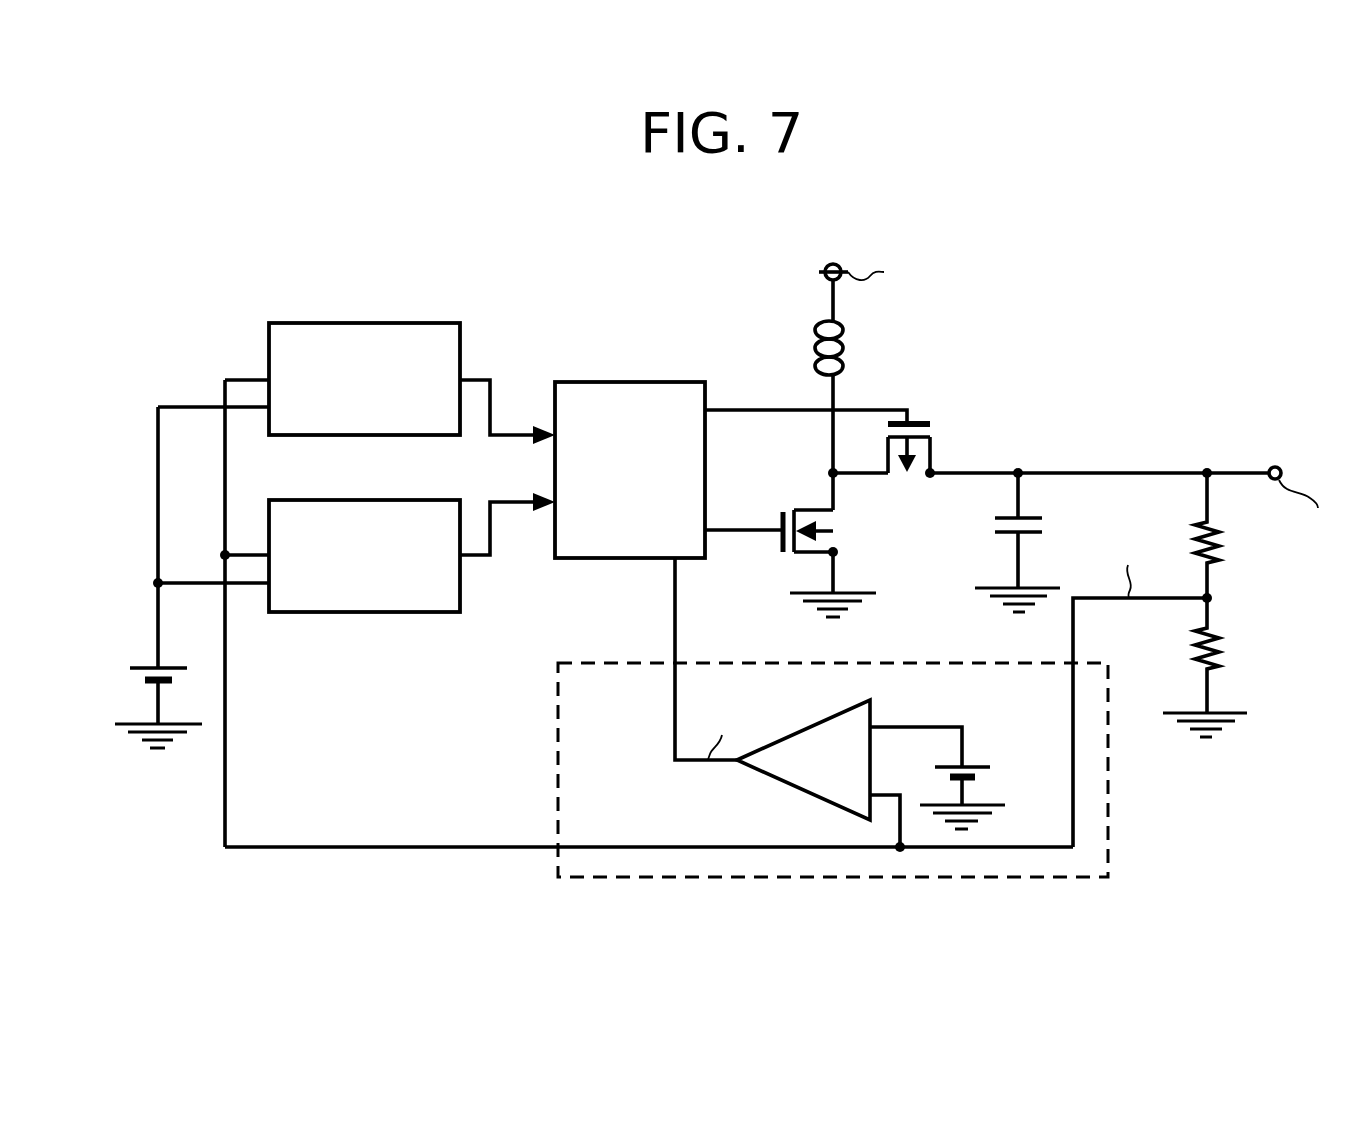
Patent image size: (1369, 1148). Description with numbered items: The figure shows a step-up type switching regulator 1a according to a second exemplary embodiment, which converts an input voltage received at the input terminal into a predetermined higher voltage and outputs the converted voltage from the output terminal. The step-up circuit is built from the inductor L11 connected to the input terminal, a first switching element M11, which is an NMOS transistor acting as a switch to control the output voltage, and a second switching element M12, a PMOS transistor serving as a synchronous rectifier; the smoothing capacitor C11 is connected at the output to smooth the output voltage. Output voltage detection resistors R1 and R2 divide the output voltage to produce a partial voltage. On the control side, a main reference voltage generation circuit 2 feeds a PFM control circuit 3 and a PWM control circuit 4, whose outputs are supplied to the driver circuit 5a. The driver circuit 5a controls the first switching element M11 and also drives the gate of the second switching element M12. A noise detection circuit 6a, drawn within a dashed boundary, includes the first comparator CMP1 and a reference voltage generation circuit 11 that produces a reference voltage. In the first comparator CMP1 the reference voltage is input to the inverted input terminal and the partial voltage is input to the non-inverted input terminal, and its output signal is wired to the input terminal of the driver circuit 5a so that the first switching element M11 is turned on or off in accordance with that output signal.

The step-up type switching regulator 1a is at (1038, 350).
The main reference voltage generation circuit 2 is at (128, 682).
The PFM control circuit 3 is at (440, 323).
The PWM control circuit 4 is at (440, 500).
The driver circuit 5a is at (661, 382).
The noise detection circuit 6a is at (556, 696).
The reference voltage generation circuit 11 is at (997, 771).
The inductor L11 is at (803, 395).
The second switching element M12 is at (1051, 436).
The first switching element M11 is at (825, 549).
The capacitor C11 is at (1000, 540).
The output voltage detection resistor R1 is at (1227, 533).
The output voltage detection resistor R2 is at (1211, 667).
The first comparator CMP1 is at (834, 773).